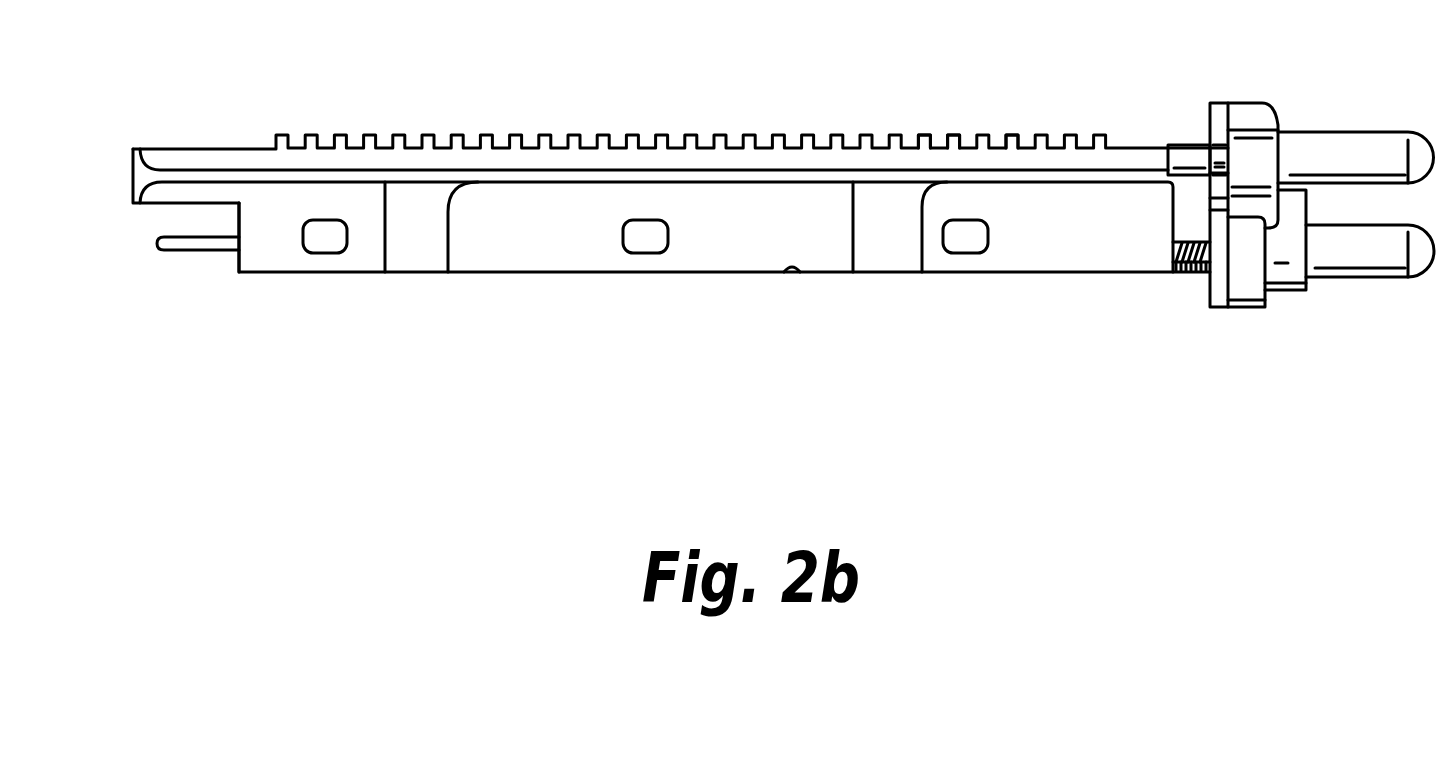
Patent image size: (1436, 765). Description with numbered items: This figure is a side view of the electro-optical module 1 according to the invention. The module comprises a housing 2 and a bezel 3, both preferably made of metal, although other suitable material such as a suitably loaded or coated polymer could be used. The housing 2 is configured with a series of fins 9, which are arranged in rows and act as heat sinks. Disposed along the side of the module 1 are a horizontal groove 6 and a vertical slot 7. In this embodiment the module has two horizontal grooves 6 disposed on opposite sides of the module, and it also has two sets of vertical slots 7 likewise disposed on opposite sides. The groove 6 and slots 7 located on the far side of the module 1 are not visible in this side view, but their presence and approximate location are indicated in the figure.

The electro-optical module 1 is at (563, 129).
The housing 2 is at (530, 247).
The bezel 3 is at (1248, 278).
The horizontal groove 6 is at (197, 173).
The vertical slot 7 is at (412, 140).
The fins 9 is at (922, 133).